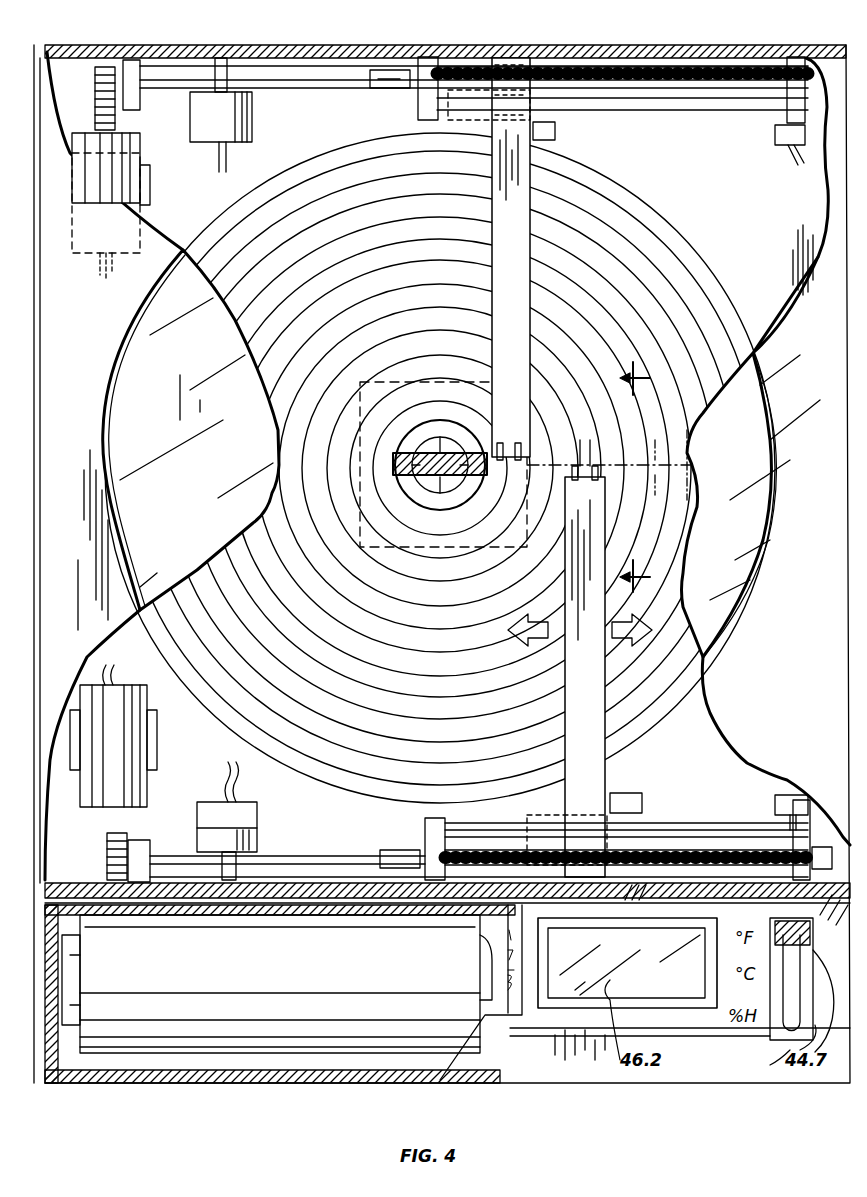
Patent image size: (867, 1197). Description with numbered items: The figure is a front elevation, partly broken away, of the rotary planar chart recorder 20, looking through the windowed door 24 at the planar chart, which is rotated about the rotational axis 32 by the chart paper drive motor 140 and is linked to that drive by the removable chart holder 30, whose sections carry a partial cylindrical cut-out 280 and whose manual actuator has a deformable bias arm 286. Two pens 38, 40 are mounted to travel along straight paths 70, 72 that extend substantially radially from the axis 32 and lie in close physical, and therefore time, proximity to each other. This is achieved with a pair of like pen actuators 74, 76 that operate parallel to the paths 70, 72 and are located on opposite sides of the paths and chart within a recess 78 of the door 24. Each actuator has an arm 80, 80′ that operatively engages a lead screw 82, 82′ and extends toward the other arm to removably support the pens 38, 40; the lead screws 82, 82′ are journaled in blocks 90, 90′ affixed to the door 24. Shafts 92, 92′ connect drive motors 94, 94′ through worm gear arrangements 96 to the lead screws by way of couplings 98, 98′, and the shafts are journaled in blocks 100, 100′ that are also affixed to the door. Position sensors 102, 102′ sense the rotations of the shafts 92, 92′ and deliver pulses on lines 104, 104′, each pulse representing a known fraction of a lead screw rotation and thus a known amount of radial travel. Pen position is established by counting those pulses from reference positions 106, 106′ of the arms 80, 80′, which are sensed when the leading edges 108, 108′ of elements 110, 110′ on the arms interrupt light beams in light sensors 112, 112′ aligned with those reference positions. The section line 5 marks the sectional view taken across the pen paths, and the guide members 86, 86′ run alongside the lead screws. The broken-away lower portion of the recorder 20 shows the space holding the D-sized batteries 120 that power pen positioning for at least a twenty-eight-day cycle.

The windowed door 24 is at (625, 45).
The removable chart holder 30 is at (418, 540).
The travel path 72 is at (690, 465).
The travel path 70 is at (648, 485).
The chart paper drive motor 140 is at (466, 380).
The partial cylindrical cut-out 280 is at (400, 490).
The deformable bias arm 286 is at (398, 460).
The rotational axis 32 is at (432, 462).
The pen 40 is at (510, 470).
The arm 80′ is at (522, 262).
The arm 80 is at (598, 712).
The pen 38 is at (583, 465).
The section line 5 is at (638, 475).
The shaft 92′ is at (314, 80).
The lead screw 82′ is at (655, 100).
The upper guide rail 86′ is at (690, 112).
The pen actuator 76 is at (710, 128).
The block 100′ is at (143, 100).
The worm gear arrangement 96 is at (92, 74).
The drive motor 94′ is at (140, 180).
The position sensor 102′ is at (226, 100).
The line 104′ is at (212, 153).
The coupling 98′ is at (375, 90).
The block 90′ is at (425, 115).
The element 110′ is at (540, 122).
The leading edge 108′ is at (555, 130).
The light sensor 112′ is at (798, 160).
The reference position 106′ is at (762, 150).
The shaft 92 is at (312, 856).
The lead screw 82 is at (735, 868).
The lower guide rail 86 is at (710, 823).
The pen actuator 74 is at (720, 800).
The block 90 is at (428, 838).
The coupling 98 is at (380, 856).
The block 100 is at (148, 845).
The position sensor 102 is at (215, 835).
The line 104 is at (236, 770).
The drive motor 94 is at (130, 733).
The recess 78 is at (302, 811).
The element 110 is at (620, 812).
The leading edge 108 is at (642, 800).
The light sensor 112 is at (795, 795).
The reference position 106 is at (757, 800).
The D-sized batteries 120 is at (200, 1025).
The rotary planar chart recorder 20 is at (716, 1088).